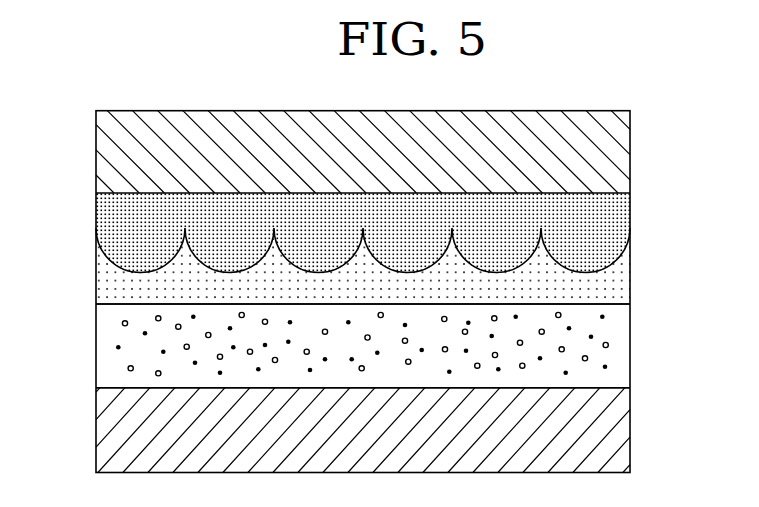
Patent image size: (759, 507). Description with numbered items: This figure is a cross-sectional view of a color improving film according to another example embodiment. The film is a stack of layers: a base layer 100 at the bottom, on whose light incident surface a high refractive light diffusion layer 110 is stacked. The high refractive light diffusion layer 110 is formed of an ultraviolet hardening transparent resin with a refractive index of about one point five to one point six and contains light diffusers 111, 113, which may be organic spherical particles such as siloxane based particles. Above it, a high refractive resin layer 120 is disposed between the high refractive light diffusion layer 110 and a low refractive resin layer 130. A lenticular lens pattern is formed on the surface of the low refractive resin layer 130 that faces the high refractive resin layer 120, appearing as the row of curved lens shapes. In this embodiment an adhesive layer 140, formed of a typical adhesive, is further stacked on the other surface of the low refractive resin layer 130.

The base layer 100 is at (617, 432).
The high refractive light diffusion layer 110 is at (617, 360).
The light diffuser 111 is at (116, 347).
The light diffuser 113 is at (122, 323).
The high refractive resin layer 120 is at (617, 287).
The low refractive resin layer 130 is at (617, 215).
The adhesive layer 140 is at (617, 152).